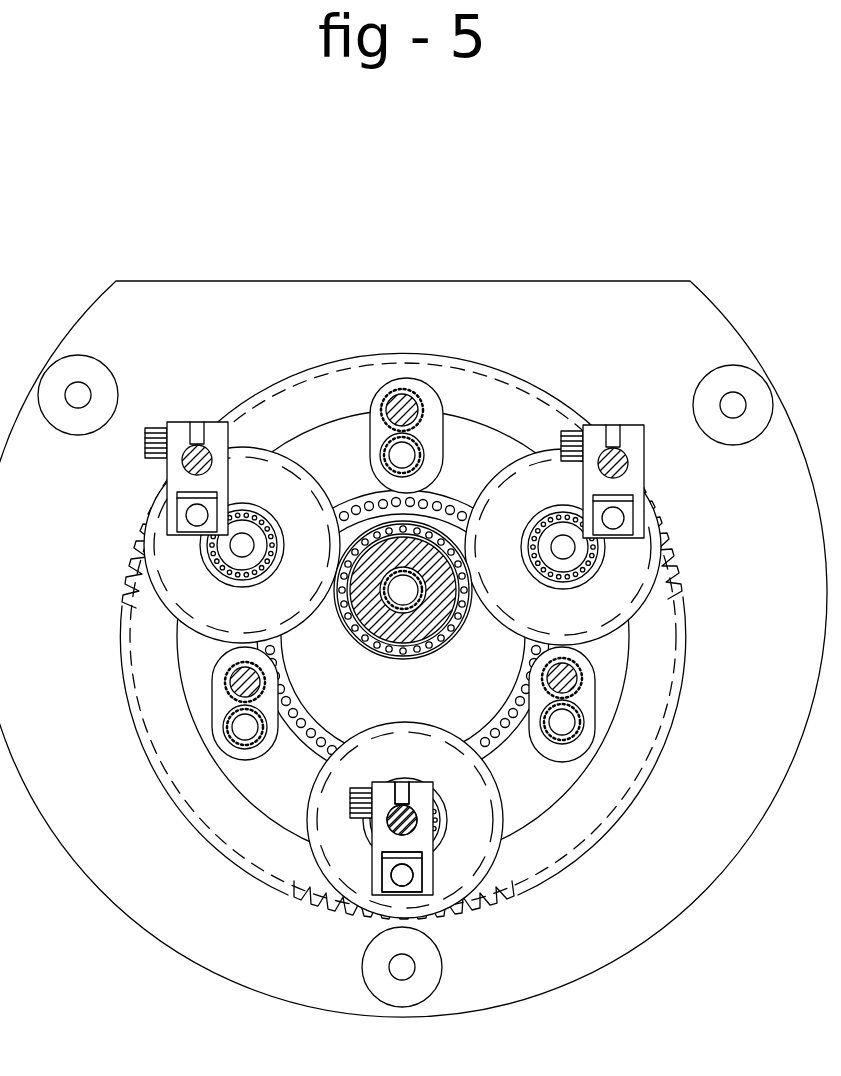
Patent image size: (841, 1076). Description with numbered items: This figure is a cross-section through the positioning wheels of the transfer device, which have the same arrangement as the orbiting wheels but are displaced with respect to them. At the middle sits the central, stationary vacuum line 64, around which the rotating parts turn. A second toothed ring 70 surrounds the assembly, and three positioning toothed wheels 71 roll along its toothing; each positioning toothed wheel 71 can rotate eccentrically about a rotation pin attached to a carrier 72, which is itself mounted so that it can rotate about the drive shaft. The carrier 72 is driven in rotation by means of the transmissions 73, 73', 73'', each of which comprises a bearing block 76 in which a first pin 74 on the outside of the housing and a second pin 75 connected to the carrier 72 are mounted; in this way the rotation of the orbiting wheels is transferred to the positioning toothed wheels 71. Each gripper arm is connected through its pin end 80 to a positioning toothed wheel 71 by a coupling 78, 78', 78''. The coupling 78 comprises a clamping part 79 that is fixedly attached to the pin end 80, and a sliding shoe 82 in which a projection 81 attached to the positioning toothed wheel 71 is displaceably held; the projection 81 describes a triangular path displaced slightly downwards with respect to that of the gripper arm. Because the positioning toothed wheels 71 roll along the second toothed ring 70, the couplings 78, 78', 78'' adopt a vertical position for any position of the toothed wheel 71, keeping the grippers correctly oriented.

The second toothed ring 70 is at (627, 937).
The positioning toothed wheel 71 is at (496, 882).
The carrier 72 is at (602, 704).
The transmission 73 is at (431, 408).
The transmission 73' is at (600, 704).
The transmission 73'' is at (212, 703).
The first pin 74 is at (400, 402).
The second pin 75 is at (395, 458).
The bearing block 76 is at (428, 436).
The coupling 78 is at (348, 838).
The coupling 78' is at (634, 481).
The coupling 78'' is at (186, 451).
The clamping part 79 is at (398, 803).
The pin end 80 is at (414, 806).
The projection 81 is at (440, 905).
The sliding shoe 82 is at (368, 890).
The central stationary vacuum line 64 is at (388, 620).